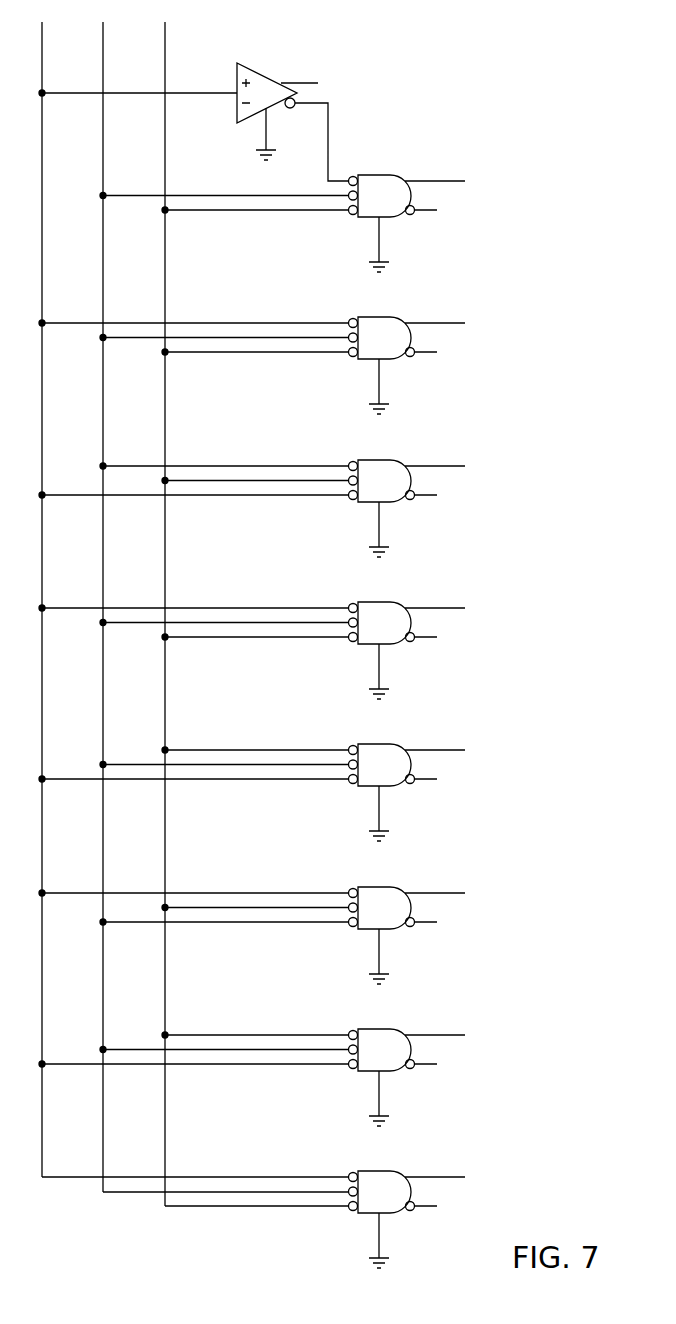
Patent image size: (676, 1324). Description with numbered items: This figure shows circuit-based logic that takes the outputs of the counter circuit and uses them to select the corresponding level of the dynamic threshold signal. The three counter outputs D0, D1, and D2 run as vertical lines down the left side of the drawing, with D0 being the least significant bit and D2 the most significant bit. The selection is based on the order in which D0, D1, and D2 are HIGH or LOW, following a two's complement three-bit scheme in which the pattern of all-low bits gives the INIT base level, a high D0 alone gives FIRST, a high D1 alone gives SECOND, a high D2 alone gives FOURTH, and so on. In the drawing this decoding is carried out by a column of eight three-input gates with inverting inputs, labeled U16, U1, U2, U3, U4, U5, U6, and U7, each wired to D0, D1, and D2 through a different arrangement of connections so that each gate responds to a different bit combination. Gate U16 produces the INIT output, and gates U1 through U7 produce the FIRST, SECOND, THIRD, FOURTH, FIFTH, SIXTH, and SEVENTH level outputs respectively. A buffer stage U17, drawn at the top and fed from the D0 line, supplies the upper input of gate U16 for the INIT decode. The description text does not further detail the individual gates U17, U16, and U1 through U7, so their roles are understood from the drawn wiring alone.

The counter output D0 is at (41, 588).
The counter output D1 is at (102, 596).
The counter output D2 is at (164, 603).
The comparator/buffer U17 is at (194, 111).
The NAND gate (INIT) U16 is at (302, 212).
The NAND gate (FIRST) U1 is at (278, 354).
The NAND gate (SECOND) U2 is at (289, 497).
The NAND gate (THIRD) U3 is at (280, 639).
The NAND gate (FOURTH) U4 is at (287, 781).
The NAND gate (FIFTH) U5 is at (278, 924).
The NAND gate (SIXTH) U6 is at (279, 1066).
The NAND gate (SEVENTH) U7 is at (293, 1208).